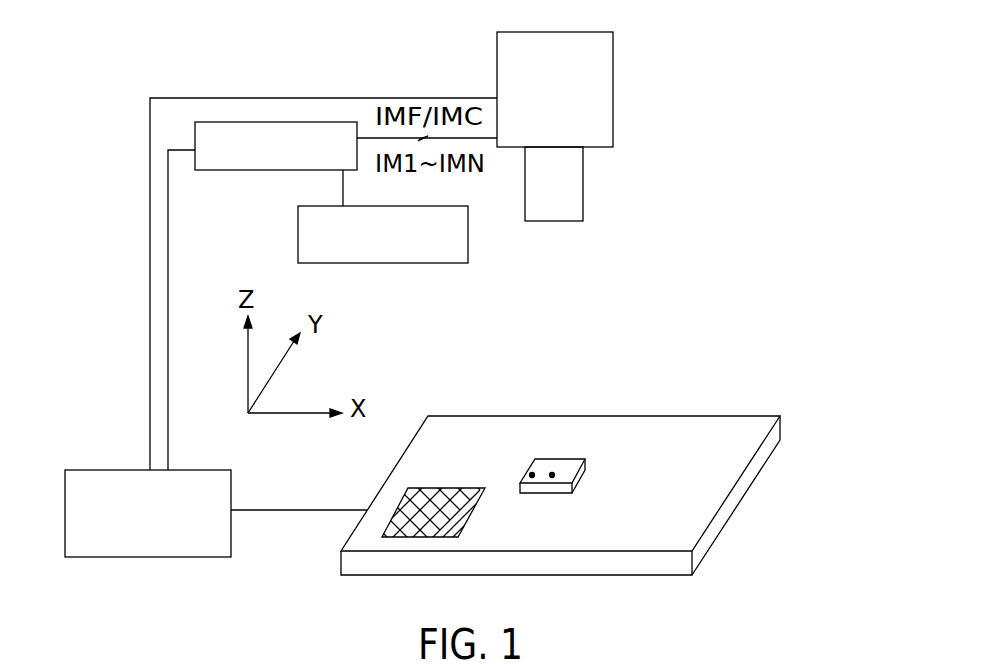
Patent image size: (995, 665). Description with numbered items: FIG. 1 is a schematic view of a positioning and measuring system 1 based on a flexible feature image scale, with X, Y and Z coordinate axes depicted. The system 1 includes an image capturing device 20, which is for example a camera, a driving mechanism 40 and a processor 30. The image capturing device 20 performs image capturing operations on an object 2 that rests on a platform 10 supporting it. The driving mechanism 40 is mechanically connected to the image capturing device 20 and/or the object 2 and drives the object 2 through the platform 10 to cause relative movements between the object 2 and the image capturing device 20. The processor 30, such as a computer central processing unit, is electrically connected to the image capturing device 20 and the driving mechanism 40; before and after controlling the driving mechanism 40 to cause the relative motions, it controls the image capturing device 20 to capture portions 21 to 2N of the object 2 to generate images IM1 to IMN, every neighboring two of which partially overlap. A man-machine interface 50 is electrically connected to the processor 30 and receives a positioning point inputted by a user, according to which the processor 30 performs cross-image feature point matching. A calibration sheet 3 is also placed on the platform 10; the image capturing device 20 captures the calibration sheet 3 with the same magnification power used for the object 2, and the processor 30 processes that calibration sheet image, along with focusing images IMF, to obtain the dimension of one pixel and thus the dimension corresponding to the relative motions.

The positioning and measuring system 1 is at (774, 134).
The image capturing device 20 is at (613, 133).
The processor 30 is at (260, 171).
The man-machine interface 50 is at (458, 248).
The driving mechanism 40 is at (110, 470).
The platform 10 is at (700, 425).
The calibration sheet 3 is at (438, 492).
The object 2 is at (558, 471).
The first portion of the object 21 is at (530, 475).
The Nth portion of the object 2N is at (556, 475).